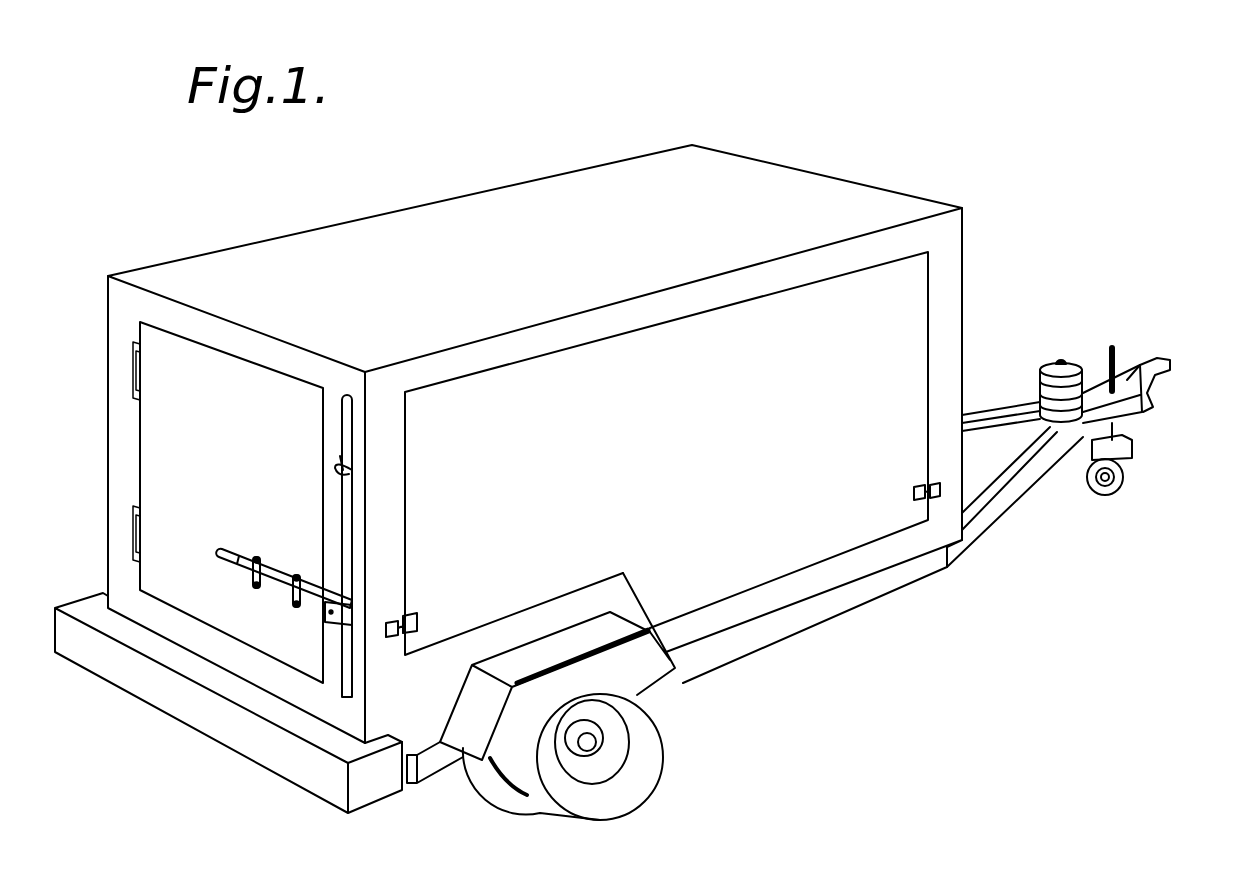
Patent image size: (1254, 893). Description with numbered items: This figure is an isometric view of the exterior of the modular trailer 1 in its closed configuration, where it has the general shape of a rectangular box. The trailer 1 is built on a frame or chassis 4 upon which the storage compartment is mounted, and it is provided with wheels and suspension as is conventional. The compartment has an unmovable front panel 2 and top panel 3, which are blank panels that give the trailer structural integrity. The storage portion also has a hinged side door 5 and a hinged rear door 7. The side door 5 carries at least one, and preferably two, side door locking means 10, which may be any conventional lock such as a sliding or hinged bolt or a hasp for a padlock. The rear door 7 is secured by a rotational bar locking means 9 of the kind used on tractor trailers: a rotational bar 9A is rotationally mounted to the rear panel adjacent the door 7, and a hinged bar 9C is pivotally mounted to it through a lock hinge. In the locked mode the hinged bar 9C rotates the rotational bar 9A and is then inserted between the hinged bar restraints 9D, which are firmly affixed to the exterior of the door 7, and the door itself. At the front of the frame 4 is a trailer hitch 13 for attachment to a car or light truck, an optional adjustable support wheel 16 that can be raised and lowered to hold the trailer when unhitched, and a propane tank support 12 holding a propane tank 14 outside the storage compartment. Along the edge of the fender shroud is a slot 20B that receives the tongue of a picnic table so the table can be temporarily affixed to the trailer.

The modular trailer 1 is at (478, 158).
The front panel 2 is at (915, 196).
The top panel 3 is at (462, 275).
The frame or chassis 4 is at (998, 502).
The hinged side door 5 is at (632, 455).
The hinged rear door 7 is at (228, 432).
The rotational bar locking means 9 is at (318, 626).
The rotational bar 9A is at (352, 472).
The hinged bar 9C is at (237, 553).
The hinged bar restraints 9D is at (297, 603).
The side door locking means 10 is at (418, 624).
The propane tank support 12 is at (1057, 416).
The trailer hitch 13 is at (1173, 363).
The propane tank 14 is at (1073, 365).
The adjustable support wheel 16 is at (1120, 460).
The slot 20B is at (652, 688).